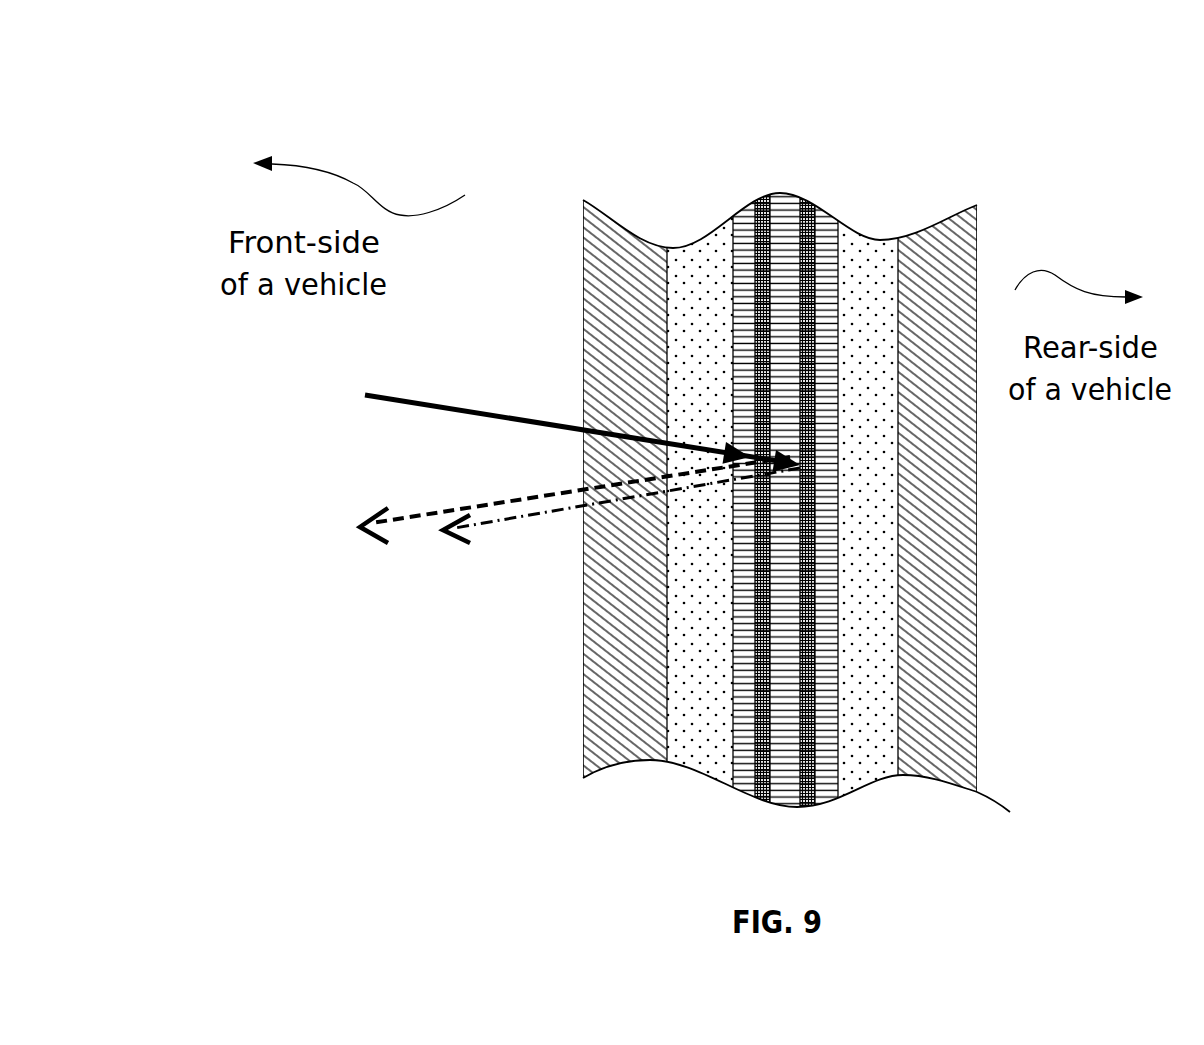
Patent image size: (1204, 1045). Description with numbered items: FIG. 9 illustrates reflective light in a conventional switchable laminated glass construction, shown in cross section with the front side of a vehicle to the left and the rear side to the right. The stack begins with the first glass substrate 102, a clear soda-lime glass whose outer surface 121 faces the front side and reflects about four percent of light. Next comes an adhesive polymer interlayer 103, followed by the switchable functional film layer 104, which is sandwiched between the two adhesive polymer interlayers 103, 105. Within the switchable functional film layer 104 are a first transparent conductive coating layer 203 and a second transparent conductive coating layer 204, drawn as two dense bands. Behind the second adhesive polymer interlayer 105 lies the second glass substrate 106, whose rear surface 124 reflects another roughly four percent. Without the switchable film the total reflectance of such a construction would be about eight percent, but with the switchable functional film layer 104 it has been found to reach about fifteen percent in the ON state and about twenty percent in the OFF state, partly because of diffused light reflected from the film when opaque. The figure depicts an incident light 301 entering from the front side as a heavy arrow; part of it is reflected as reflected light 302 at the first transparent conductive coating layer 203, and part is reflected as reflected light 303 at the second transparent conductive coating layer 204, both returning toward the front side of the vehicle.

The first glass substrate 102 is at (625, 697).
The surface of the first glass substrate 121 is at (585, 745).
The adhesive polymer interlayer 103 is at (705, 275).
The switchable functional film layer 104 is at (769, 467).
The first transparent conductive coating layer 203 is at (760, 777).
The second transparent conductive coating layer 204 is at (807, 777).
The adhesive polymer interlayer 105 is at (866, 275).
The second glass substrate 106 is at (933, 692).
The surface of the second glass substrate 124 is at (977, 640).
The incident light 301 is at (540, 416).
The reflected light 302 is at (495, 495).
The reflected light 303 is at (507, 527).